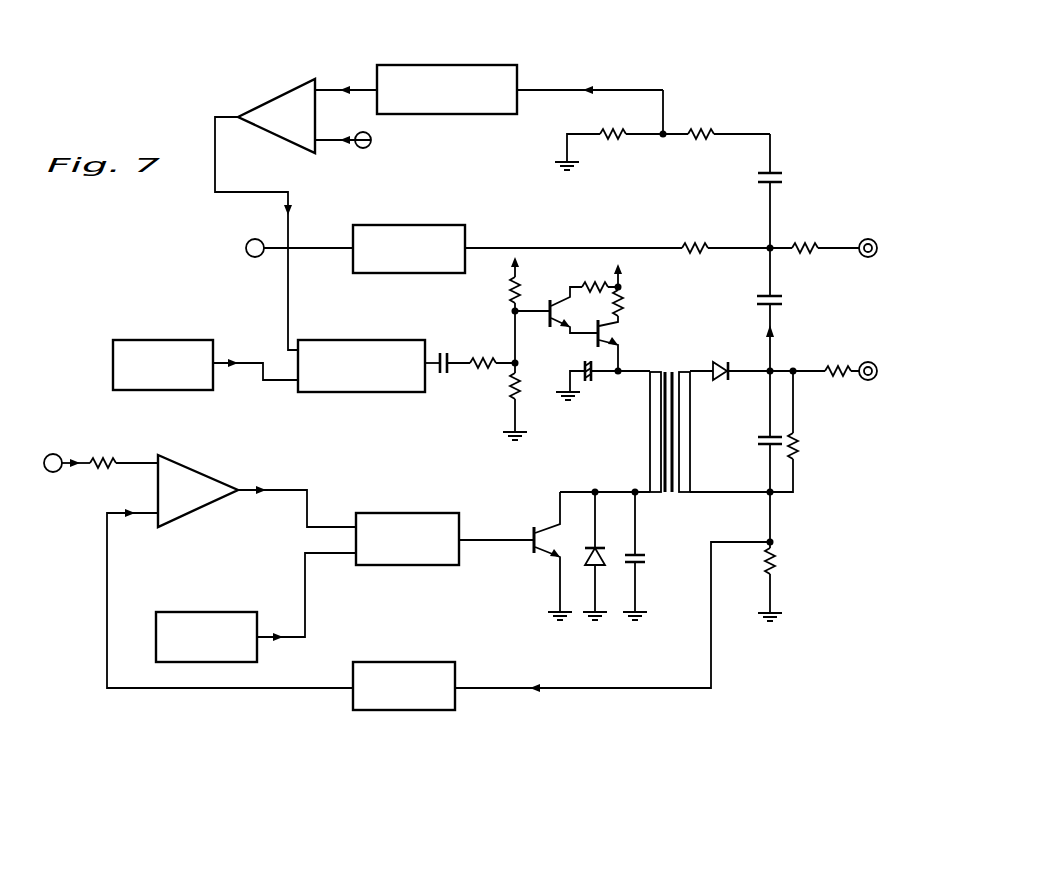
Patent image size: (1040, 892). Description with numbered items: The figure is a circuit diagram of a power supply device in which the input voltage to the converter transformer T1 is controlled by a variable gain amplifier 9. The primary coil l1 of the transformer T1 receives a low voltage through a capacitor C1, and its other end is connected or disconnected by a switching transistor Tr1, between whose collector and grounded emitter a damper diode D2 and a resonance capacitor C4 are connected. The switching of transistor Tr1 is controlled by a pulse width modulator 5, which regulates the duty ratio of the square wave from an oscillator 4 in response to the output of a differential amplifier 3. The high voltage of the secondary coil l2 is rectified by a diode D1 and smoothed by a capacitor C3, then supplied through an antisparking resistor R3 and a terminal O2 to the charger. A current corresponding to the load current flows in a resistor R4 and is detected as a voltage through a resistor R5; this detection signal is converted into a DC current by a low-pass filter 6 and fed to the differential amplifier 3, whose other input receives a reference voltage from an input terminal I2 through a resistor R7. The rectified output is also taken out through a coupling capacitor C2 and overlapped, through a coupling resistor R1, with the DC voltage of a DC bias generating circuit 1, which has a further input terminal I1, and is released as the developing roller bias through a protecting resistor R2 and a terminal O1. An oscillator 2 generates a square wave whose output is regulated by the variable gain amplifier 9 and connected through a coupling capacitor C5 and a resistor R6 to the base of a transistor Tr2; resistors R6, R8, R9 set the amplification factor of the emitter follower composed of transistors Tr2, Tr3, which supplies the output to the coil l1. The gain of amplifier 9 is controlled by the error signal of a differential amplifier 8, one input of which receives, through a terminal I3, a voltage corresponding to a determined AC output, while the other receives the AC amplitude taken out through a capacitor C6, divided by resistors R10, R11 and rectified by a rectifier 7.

The DC bias generating circuit 1 is at (412, 226).
The oscillator 2 is at (161, 339).
The differential amplifier 3 is at (206, 468).
The oscillator 4 is at (206, 612).
The pulse width modulator 5 is at (411, 513).
The low-pass filter 6 is at (410, 662).
The rectifier 7 is at (519, 74).
The differential amplifier 8 is at (265, 102).
The variable gain amplifier 9 is at (341, 339).
The input terminal 1 I1 is at (254, 238).
The input terminal I2 is at (56, 452).
The terminal I3 is at (372, 142).
The terminal O1 is at (872, 238).
The terminal O2 is at (878, 362).
The coupling resistor R1 is at (697, 240).
The protecting resistor R2 is at (808, 240).
The antisparking resistor R3 is at (830, 364).
The resistor R4 is at (800, 452).
The resistor R5 is at (777, 566).
The resistor R6 is at (477, 356).
The resistor R7 is at (104, 468).
The resistor R8 is at (508, 287).
The resistor R9 is at (522, 396).
The resistor R10 is at (696, 131).
The resistor R11 is at (604, 131).
The capacitor C1 is at (588, 382).
The coupling capacitor C2 is at (784, 300).
The capacitor C3 is at (758, 446).
The resonance capacitor C4 is at (648, 560).
The coupling capacitor C5 is at (440, 350).
The capacitor C6 is at (784, 178).
The diode D1 is at (722, 362).
The damper diode D2 is at (607, 564).
The transistor Tr1 is at (548, 530).
The transistor Tr2 is at (552, 330).
The transistor Tr3 is at (620, 332).
The converter transformer T1 is at (665, 409).
The primary coil l1 is at (648, 450).
The secondary coil l2 is at (692, 447).